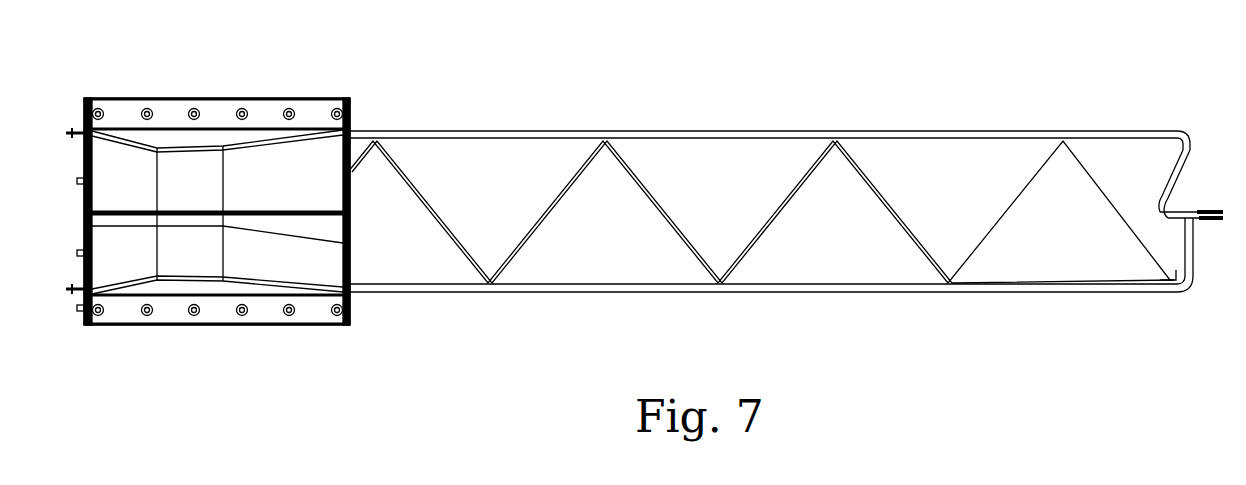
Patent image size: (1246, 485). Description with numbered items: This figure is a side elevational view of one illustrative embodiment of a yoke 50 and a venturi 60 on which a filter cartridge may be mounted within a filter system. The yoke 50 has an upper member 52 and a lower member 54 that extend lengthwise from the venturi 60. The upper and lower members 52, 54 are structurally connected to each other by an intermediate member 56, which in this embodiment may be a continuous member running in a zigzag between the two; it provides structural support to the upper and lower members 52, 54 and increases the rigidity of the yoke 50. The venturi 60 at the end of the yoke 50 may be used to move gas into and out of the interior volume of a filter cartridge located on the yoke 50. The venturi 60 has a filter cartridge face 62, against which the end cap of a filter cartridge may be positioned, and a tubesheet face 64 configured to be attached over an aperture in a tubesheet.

The yoke 50 is at (1103, 104).
The upper member 52 is at (948, 130).
The lower member 54 is at (990, 295).
The intermediate member 56 is at (922, 258).
The venturi 60 is at (312, 72).
The filter cartridge face 62 is at (364, 108).
The tubesheet face 64 is at (84, 112).